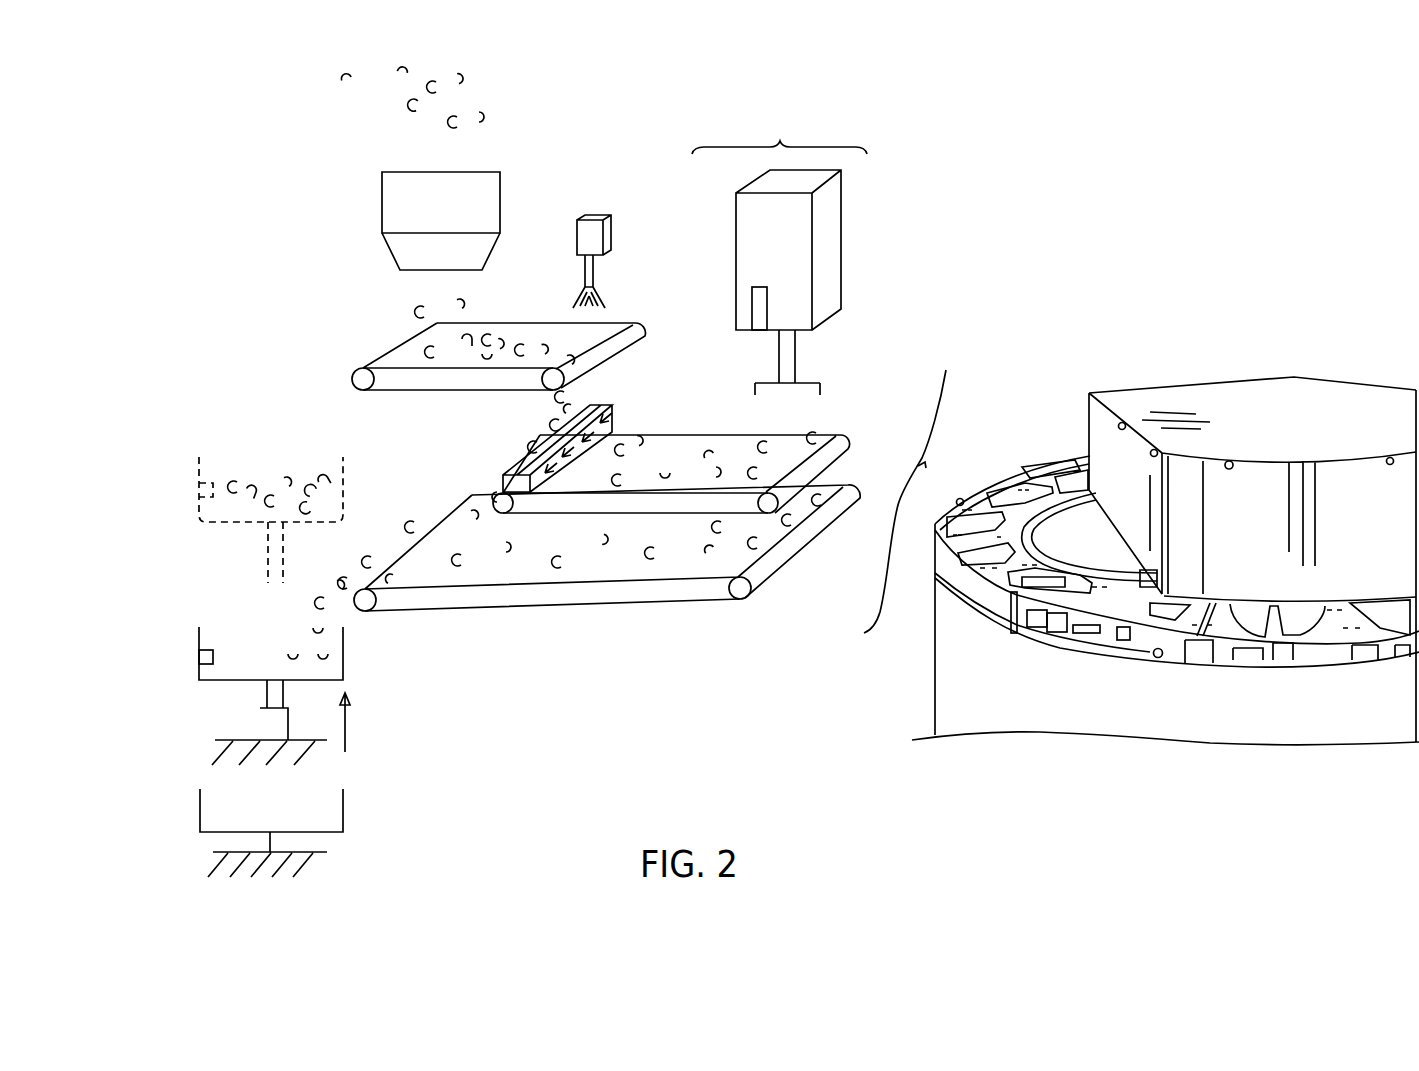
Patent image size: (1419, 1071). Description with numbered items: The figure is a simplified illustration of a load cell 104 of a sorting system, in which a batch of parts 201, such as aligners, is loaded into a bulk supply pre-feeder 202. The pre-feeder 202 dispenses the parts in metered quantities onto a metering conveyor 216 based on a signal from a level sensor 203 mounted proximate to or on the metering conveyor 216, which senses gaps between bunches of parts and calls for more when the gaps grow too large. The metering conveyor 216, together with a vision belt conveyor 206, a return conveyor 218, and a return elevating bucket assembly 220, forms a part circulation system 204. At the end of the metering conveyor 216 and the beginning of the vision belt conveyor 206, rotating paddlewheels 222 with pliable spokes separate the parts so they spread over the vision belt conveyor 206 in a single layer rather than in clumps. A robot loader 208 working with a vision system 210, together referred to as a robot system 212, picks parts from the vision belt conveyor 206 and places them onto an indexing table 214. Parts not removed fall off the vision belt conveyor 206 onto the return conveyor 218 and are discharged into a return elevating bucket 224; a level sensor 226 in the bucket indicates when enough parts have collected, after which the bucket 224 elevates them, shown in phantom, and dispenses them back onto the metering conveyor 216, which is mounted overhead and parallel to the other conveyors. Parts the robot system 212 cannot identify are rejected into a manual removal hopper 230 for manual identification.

The load cell 104 is at (1087, 101).
The parts 201 is at (397, 49).
The bulk supply pre-feeder 202 is at (382, 197).
The level sensor 203 is at (604, 237).
The part circulation system 204 is at (948, 469).
The vision belt conveyor 206 is at (846, 438).
The robot loader 208 is at (812, 278).
The vision system 210 is at (752, 297).
The robot system 212 is at (779, 132).
The indexing table 214 is at (1036, 466).
The metering conveyor 216 is at (352, 380).
The return conveyor 218 is at (633, 594).
The return elevating bucket assembly 220 is at (157, 621).
The paddlewheels 222 is at (615, 411).
The return elevating bucket 224 is at (199, 509).
The level sensor 226 is at (213, 661).
The manual removal hopper 230 is at (343, 812).